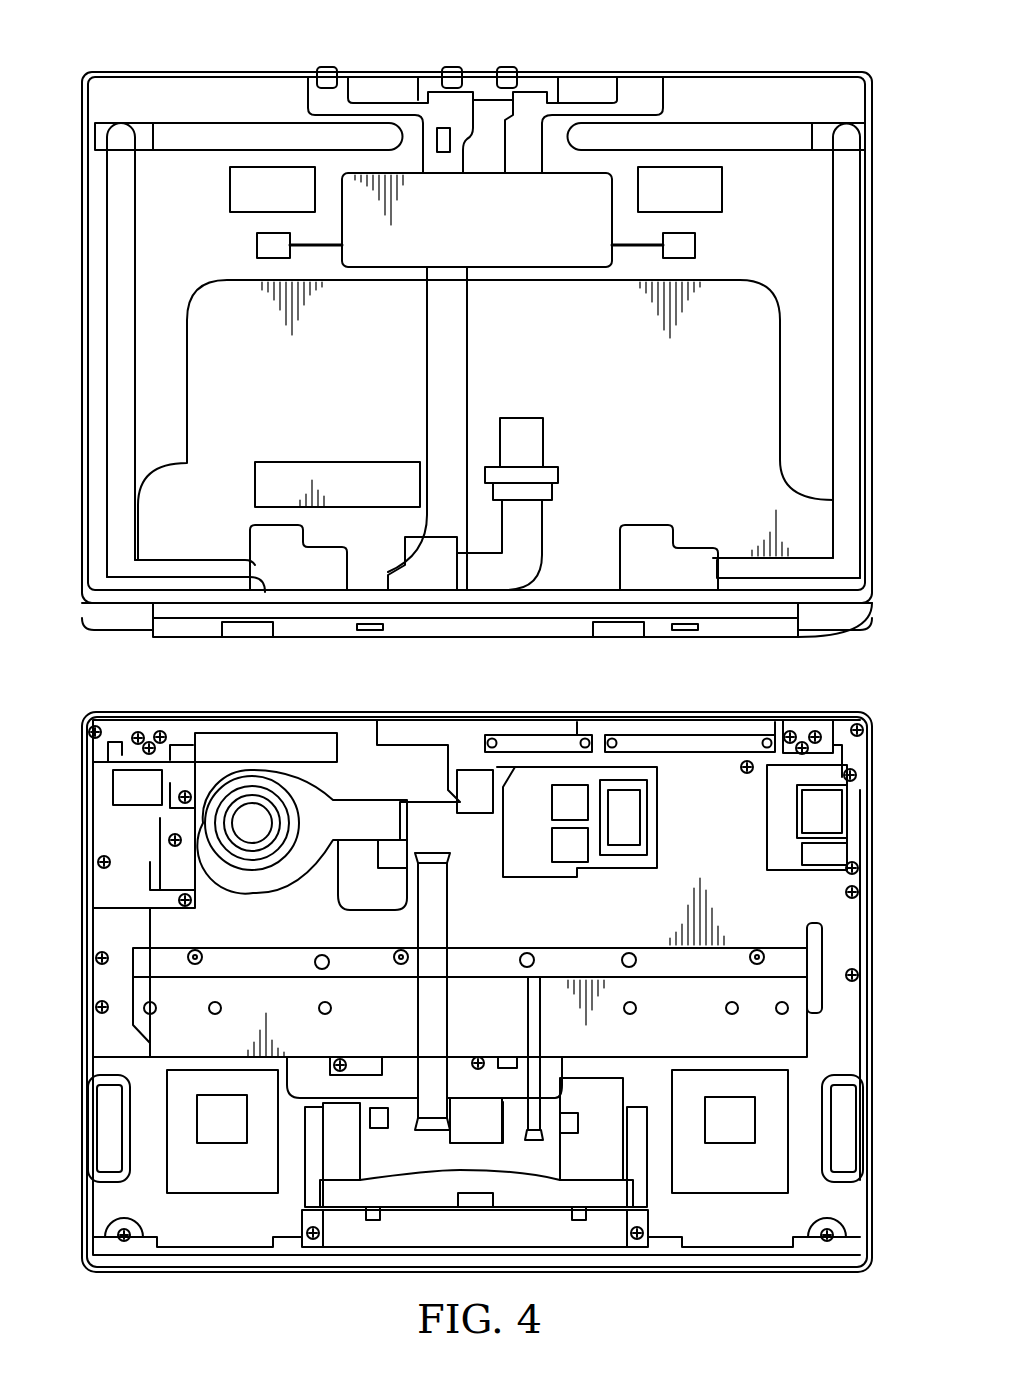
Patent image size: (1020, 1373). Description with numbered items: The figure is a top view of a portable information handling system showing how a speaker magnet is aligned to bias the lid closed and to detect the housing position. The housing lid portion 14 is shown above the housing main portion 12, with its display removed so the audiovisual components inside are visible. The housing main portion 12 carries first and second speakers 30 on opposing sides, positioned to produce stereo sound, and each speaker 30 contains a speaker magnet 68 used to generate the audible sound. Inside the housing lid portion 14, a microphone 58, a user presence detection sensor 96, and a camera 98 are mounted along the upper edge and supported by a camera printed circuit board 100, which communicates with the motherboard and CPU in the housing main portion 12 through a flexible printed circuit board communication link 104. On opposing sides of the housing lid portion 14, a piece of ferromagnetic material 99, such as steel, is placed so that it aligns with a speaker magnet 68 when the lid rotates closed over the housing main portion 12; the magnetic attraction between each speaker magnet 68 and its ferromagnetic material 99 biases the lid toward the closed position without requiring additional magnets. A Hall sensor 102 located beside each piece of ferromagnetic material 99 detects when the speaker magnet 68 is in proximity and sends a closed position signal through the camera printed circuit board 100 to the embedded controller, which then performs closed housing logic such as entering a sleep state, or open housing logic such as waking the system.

The housing main portion 12 is at (872, 995).
The housing lid portion 14 is at (872, 346).
The speaker 30 is at (180, 1177).
The microphone 58 is at (327, 67).
The speaker magnet 68 is at (215, 1118).
The user presence detection sensor 96 is at (450, 67).
The camera 98 is at (508, 67).
The ferromagnetic material 99 is at (230, 190).
The camera printed circuit board 100 is at (548, 252).
The Hall sensor 102 is at (257, 243).
The flexible printed circuit board communication link 104 is at (435, 378).